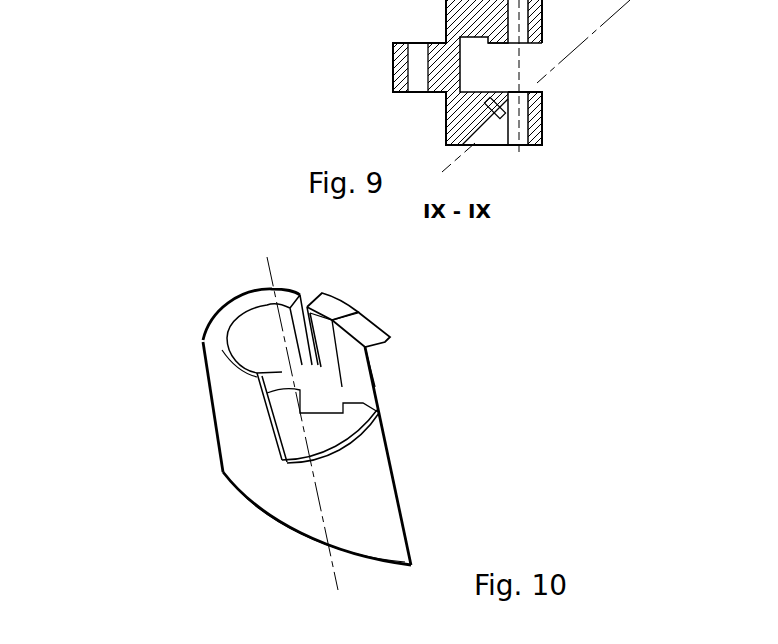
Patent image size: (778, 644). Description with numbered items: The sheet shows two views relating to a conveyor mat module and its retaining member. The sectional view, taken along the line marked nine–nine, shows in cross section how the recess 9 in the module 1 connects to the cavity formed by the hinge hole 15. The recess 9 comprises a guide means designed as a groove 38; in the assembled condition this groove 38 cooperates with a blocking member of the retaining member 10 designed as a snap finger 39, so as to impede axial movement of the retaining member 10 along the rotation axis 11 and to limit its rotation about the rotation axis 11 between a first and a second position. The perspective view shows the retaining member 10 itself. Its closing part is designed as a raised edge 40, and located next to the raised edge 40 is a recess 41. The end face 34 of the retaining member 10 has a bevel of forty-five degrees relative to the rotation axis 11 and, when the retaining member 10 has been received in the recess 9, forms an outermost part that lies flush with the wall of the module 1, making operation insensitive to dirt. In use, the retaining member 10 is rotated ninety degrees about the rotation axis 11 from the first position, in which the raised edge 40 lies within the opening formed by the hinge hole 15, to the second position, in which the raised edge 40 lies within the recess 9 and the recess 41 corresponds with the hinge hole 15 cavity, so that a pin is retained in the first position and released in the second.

In FIG. 9, the module 1 is at (333, 112).
In FIG. 9, the recess 9 is at (503, 110).
In FIG. 9, the rotation axis 11 is at (598, 28).
In FIG. 10, the rotation axis 11 is at (333, 568).
In FIG. 9, the hinge hole 15 is at (516, 120).
In FIG. 9, the groove 38 is at (497, 98).
In FIG. 10, the retaining member 10 is at (170, 512).
In FIG. 10, the end face 34 is at (272, 515).
In FIG. 10, the snap finger 39 is at (350, 333).
In FIG. 10, the raised edge 40 is at (233, 392).
In FIG. 10, the recess 41 is at (312, 348).